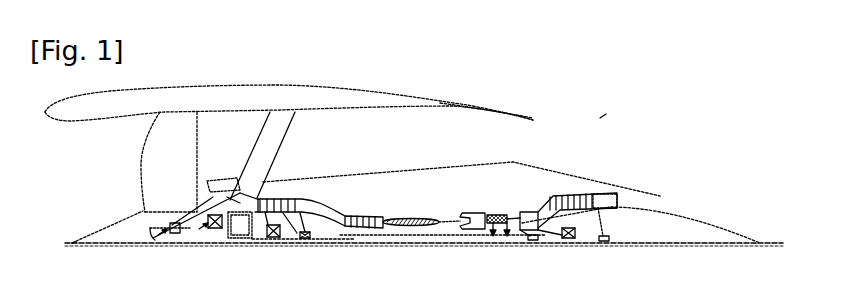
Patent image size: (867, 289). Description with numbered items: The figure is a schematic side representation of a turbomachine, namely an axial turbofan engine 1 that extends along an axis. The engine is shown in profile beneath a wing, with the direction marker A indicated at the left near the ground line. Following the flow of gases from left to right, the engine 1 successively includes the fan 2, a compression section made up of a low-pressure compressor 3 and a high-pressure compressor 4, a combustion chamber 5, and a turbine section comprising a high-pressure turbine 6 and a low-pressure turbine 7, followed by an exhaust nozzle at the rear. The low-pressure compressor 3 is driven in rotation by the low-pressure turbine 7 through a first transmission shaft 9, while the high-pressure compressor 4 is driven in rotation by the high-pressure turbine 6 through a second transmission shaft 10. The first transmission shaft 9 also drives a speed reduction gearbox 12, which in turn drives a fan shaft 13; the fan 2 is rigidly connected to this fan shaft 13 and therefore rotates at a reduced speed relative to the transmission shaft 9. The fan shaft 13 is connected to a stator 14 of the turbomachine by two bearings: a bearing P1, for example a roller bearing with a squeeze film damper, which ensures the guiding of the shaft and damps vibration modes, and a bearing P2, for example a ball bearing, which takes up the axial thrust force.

The axial turbofan engine 1 is at (604, 116).
The fan 2 is at (157, 166).
The low-pressure compressor 3 is at (290, 200).
The high-pressure compressor 4 is at (378, 236).
The combustion chamber 5 is at (480, 214).
The high-pressure turbine 6 is at (500, 215).
The low-pressure turbine 7 is at (582, 192).
The first transmission shaft 9 is at (478, 247).
The second transmission shaft 10 is at (420, 236).
The speed reduction gearbox 12 is at (240, 230).
The fan shaft 13 is at (176, 238).
The stator 14 is at (220, 183).
The direction A is at (72, 243).
The bearing P1 is at (155, 241).
The bearing P2 is at (200, 240).